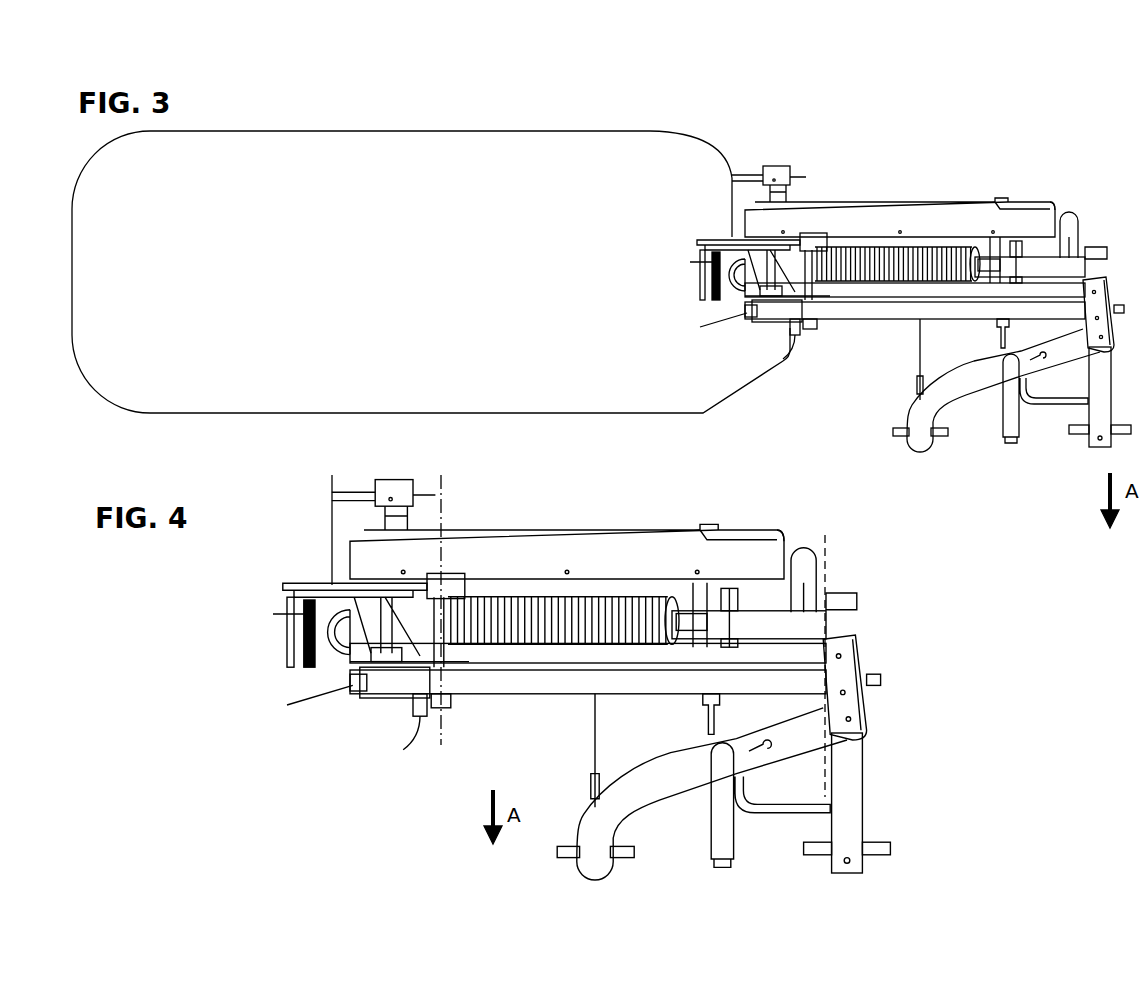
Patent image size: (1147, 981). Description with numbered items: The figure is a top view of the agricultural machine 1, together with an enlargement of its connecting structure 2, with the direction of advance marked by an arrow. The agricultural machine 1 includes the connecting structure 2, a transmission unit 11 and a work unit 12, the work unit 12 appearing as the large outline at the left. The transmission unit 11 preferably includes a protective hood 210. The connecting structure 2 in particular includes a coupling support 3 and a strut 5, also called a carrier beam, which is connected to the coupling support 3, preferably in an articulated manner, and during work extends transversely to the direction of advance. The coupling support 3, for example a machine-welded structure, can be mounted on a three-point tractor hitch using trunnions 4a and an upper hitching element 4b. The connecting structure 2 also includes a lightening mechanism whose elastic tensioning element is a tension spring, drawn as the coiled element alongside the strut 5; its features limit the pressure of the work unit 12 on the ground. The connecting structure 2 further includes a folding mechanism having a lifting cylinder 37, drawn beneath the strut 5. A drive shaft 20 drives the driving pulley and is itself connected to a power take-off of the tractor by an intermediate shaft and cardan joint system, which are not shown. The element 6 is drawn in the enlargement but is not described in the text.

In FIG. 3, the agricultural machine 1 is at (352, 113).
In FIG. 3, the work unit 12 is at (542, 131).
In FIG. 3, the connecting structure 2 is at (830, 146).
In FIG. 3, the transmission unit 11 is at (937, 203).
In FIG. 4, the transmission unit 11 is at (553, 533).
In FIG. 3, the protective hood 210 is at (962, 217).
In FIG. 4, the protective hood 210 is at (652, 548).
In FIG. 3, the strut 5 is at (1075, 270).
In FIG. 4, the strut 5 is at (806, 630).
In FIG. 3, the lifting cylinder 37 is at (967, 315).
In FIG. 4, the lifting cylinder 37 is at (665, 690).
In FIG. 3, the drive shaft 20 is at (998, 348).
In FIG. 3, the coupling support 3 is at (973, 387).
In FIG. 4, the coupling support 3 is at (668, 787).
In FIG. 3, the trunnions 4a is at (948, 435).
In FIG. 4, the trunnions 4a is at (820, 856).
In FIG. 3, the upper hitching element 4b is at (1022, 437).
In FIG. 4, the pivot bracket 6 is at (852, 727).